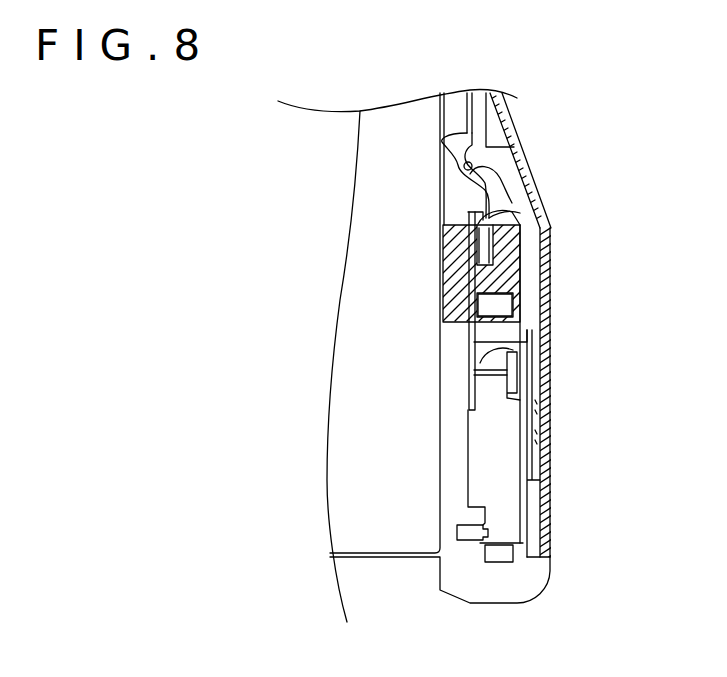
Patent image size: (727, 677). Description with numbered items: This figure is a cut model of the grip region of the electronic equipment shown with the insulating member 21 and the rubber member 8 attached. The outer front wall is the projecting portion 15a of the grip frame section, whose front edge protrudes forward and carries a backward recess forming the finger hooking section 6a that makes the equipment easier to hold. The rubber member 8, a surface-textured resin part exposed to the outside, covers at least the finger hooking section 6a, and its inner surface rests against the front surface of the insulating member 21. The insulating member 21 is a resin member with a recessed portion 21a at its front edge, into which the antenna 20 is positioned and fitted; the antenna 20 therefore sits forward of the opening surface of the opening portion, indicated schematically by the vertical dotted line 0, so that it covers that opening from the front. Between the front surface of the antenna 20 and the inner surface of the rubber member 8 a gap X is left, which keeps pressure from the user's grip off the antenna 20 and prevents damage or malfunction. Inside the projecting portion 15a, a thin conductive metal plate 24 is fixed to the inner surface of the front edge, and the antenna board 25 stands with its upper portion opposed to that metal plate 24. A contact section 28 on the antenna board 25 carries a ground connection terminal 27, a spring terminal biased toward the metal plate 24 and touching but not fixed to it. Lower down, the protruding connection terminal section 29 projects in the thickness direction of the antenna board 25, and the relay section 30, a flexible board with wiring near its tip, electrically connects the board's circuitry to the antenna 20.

The projecting portion 15a is at (522, 113).
The finger hooking section 6a is at (529, 139).
The rubber member 8 is at (521, 198).
The antenna board 25 is at (486, 215).
The metal plate 24 is at (508, 266).
The contact section 28 is at (493, 297).
The ground connection terminal 27 is at (505, 320).
The protruding connection terminal section 29 is at (500, 350).
The relay section 30 is at (513, 378).
The gap X is at (528, 420).
The antenna 20 is at (523, 452).
The recessed portion 21a is at (534, 471).
The insulating member 21 is at (545, 516).
The opening surface of the opening portion 0 is at (540, 551).